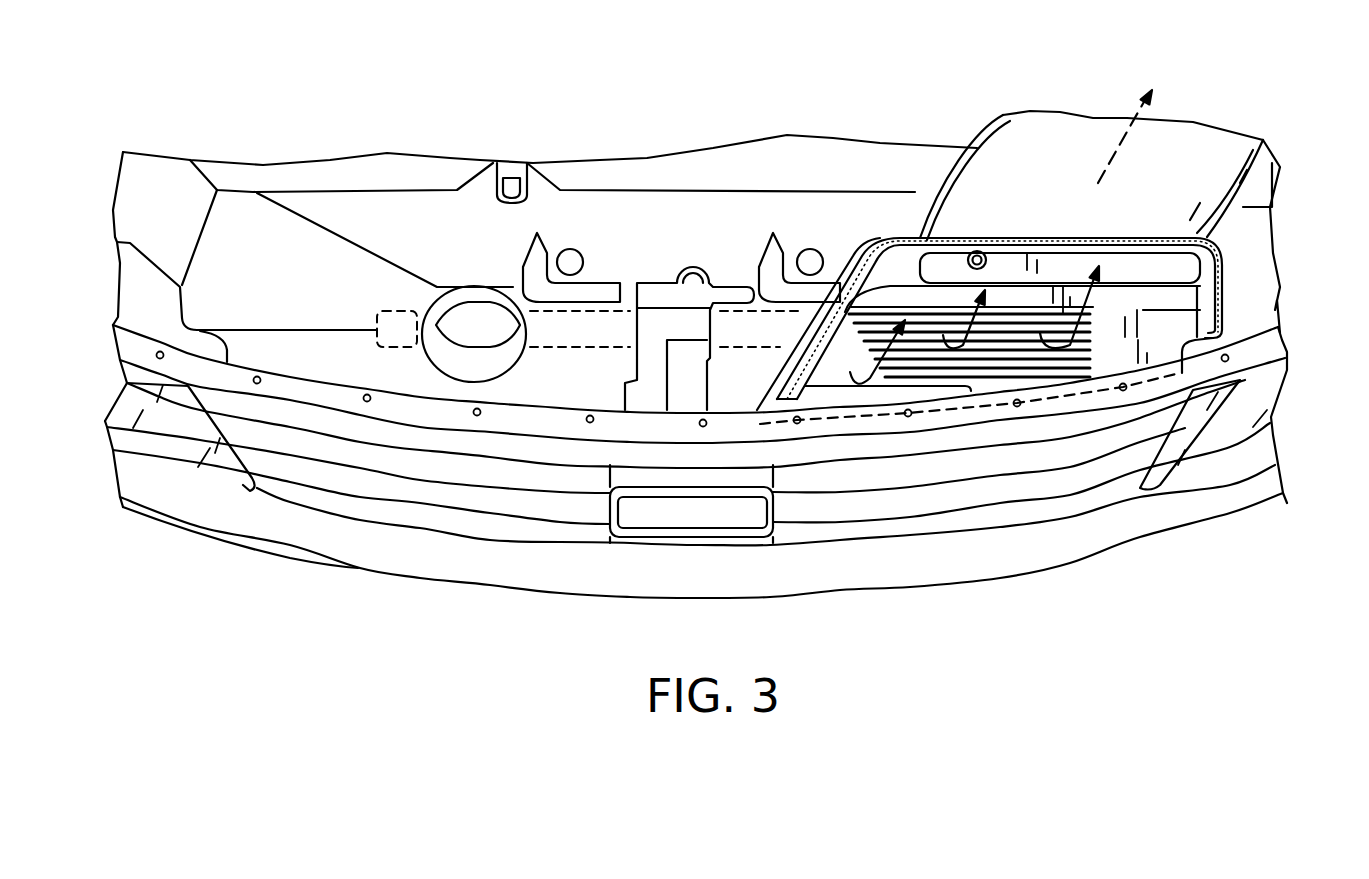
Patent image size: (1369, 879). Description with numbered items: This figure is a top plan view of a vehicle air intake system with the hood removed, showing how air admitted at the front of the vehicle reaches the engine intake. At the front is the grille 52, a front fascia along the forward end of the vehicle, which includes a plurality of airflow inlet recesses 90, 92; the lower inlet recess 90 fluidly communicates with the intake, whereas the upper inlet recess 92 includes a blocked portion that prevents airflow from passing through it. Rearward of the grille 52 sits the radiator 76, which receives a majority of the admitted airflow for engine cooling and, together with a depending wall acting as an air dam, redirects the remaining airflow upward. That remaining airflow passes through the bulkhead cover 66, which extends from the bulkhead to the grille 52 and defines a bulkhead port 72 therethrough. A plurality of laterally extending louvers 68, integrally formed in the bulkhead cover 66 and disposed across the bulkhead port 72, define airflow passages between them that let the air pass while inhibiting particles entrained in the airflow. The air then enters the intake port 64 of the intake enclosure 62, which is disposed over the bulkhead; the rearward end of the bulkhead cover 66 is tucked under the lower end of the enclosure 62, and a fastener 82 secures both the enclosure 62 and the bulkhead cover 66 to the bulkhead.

The front fascia or grille 52 is at (696, 500).
The intake tube or enclosure 62 is at (1040, 150).
The intake port 64 is at (1145, 253).
The bulkhead cover 66 is at (1178, 317).
The louvers 68 is at (1050, 367).
The bulkhead port 72 is at (1000, 367).
The radiator 76 is at (517, 340).
The fastener 82 is at (978, 250).
The lower inlet recess 90 is at (833, 532).
The upper inlet recess 92 is at (908, 473).